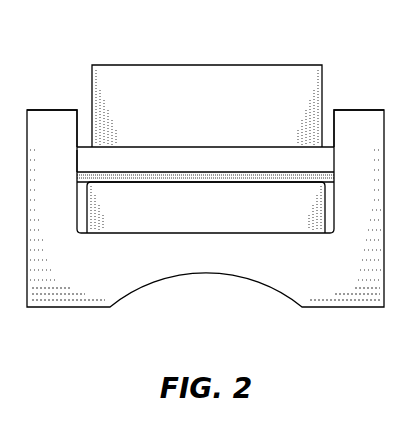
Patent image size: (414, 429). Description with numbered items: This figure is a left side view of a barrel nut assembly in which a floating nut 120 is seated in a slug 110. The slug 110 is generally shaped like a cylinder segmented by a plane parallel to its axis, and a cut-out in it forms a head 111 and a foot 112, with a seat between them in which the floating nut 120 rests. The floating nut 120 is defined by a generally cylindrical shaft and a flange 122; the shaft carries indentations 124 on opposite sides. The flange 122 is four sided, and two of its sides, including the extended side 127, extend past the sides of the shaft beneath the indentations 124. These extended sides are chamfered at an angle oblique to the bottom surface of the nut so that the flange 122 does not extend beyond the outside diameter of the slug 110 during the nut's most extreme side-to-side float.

The slug 110 is at (324, 282).
The head 111 is at (347, 133).
The foot 112 is at (41, 134).
The floating nut 120 is at (182, 94).
The flange 122 is at (127, 200).
The indentations 124 is at (205, 178).
The extended side of flange 127 is at (183, 217).